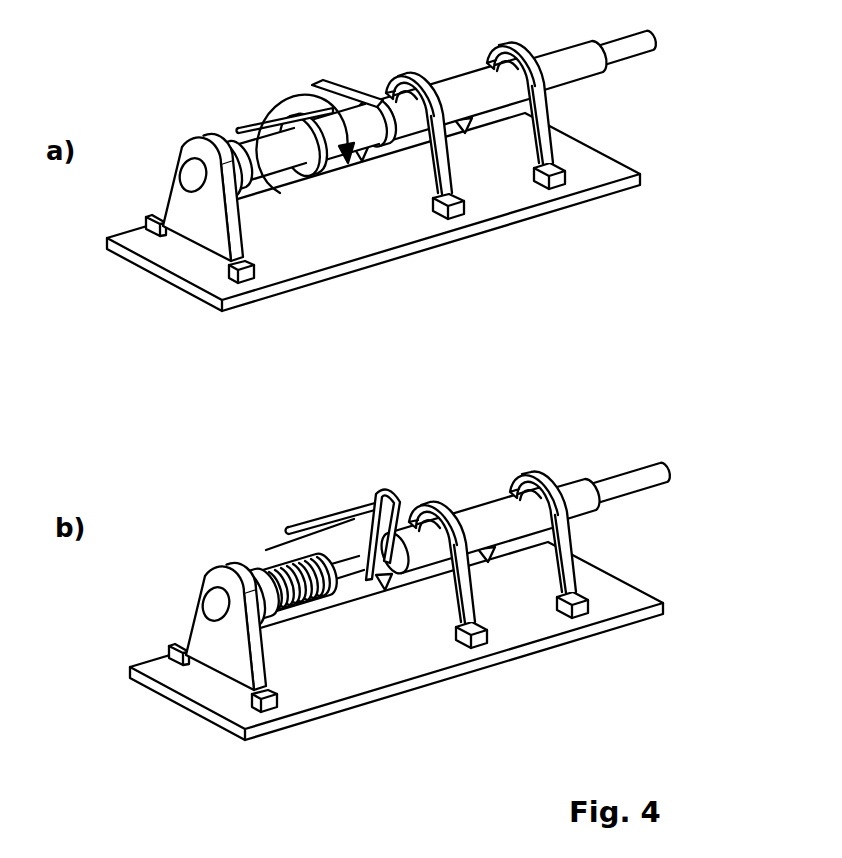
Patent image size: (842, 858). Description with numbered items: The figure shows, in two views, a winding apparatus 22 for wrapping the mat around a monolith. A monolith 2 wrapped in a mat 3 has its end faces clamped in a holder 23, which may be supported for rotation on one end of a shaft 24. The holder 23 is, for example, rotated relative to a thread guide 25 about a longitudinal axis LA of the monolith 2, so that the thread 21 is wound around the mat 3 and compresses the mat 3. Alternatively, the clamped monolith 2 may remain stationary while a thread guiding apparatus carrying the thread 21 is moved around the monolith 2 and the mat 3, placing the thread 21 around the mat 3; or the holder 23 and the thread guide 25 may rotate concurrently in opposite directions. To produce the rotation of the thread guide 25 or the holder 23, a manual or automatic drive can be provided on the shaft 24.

The winding apparatus 22 is at (172, 141).
The holder 23 is at (291, 131).
The thread guide 25 is at (302, 102).
The shaft 24 is at (630, 57).
The monolith 2 is at (247, 566).
The mat 3 is at (268, 560).
The thread 21 is at (280, 540).
The longitudinal axis LA is at (213, 604).